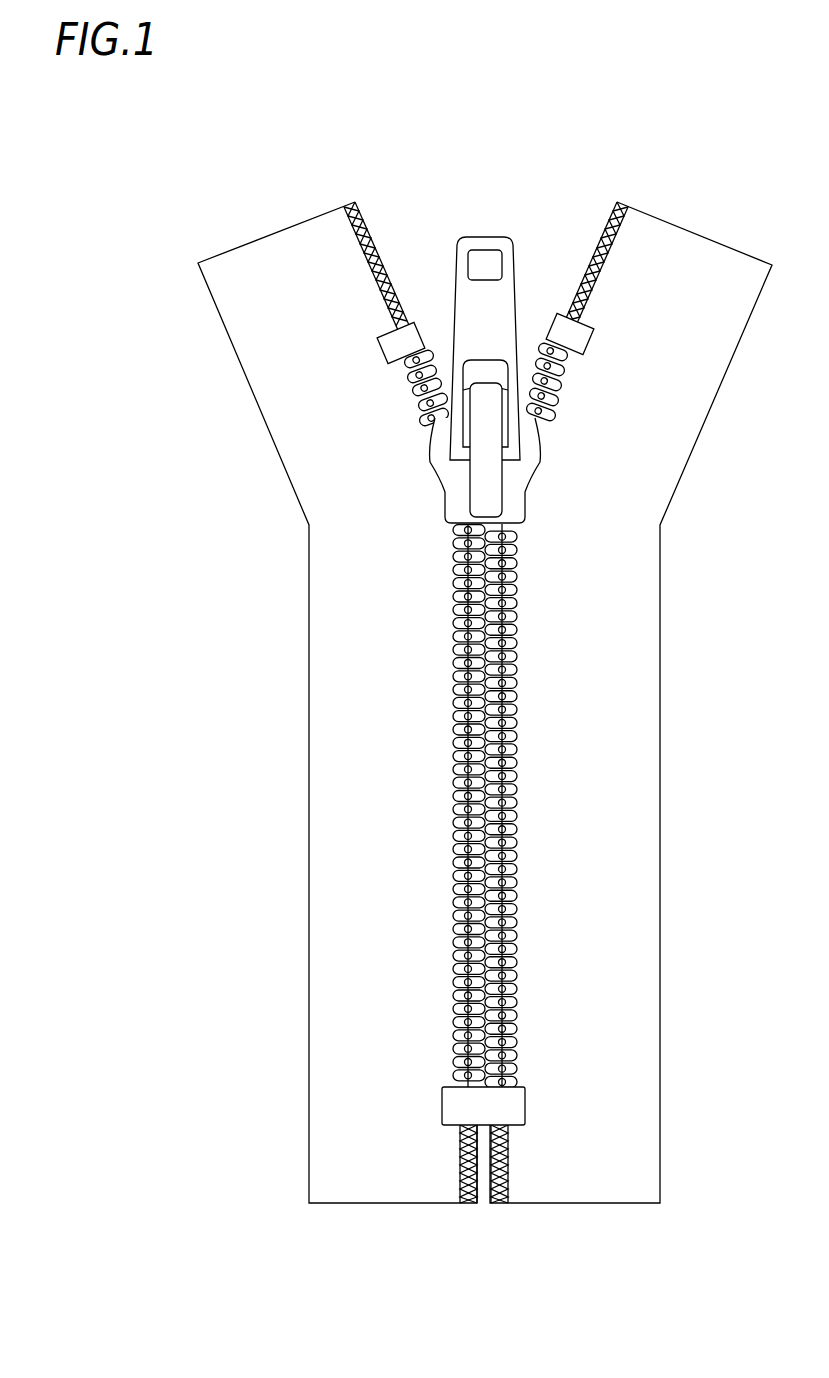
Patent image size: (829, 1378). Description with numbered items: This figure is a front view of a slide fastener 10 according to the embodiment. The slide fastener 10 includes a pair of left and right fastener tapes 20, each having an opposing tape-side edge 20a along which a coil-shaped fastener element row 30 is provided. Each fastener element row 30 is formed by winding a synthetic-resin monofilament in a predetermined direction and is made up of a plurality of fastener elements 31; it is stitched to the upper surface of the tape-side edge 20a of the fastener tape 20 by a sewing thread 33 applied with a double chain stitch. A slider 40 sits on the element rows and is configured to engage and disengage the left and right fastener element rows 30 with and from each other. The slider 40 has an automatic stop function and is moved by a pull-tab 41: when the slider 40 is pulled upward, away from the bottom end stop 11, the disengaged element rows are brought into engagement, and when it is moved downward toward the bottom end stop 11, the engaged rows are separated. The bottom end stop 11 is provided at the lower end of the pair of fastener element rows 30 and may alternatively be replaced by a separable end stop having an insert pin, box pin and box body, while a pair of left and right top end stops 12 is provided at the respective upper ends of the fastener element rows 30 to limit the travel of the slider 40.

The slide fastener 10 is at (643, 168).
The bottom end stop 11 is at (507, 1105).
The top end stop 12 is at (402, 342).
The fastener tape 20 is at (282, 257).
The tape-side edge 20a is at (364, 226).
The fastener element row 30 is at (446, 575).
The fastener element 31 is at (447, 343).
The sewing thread 33 is at (455, 648).
The slider 40 is at (532, 448).
The pull-tab 41 is at (481, 242).